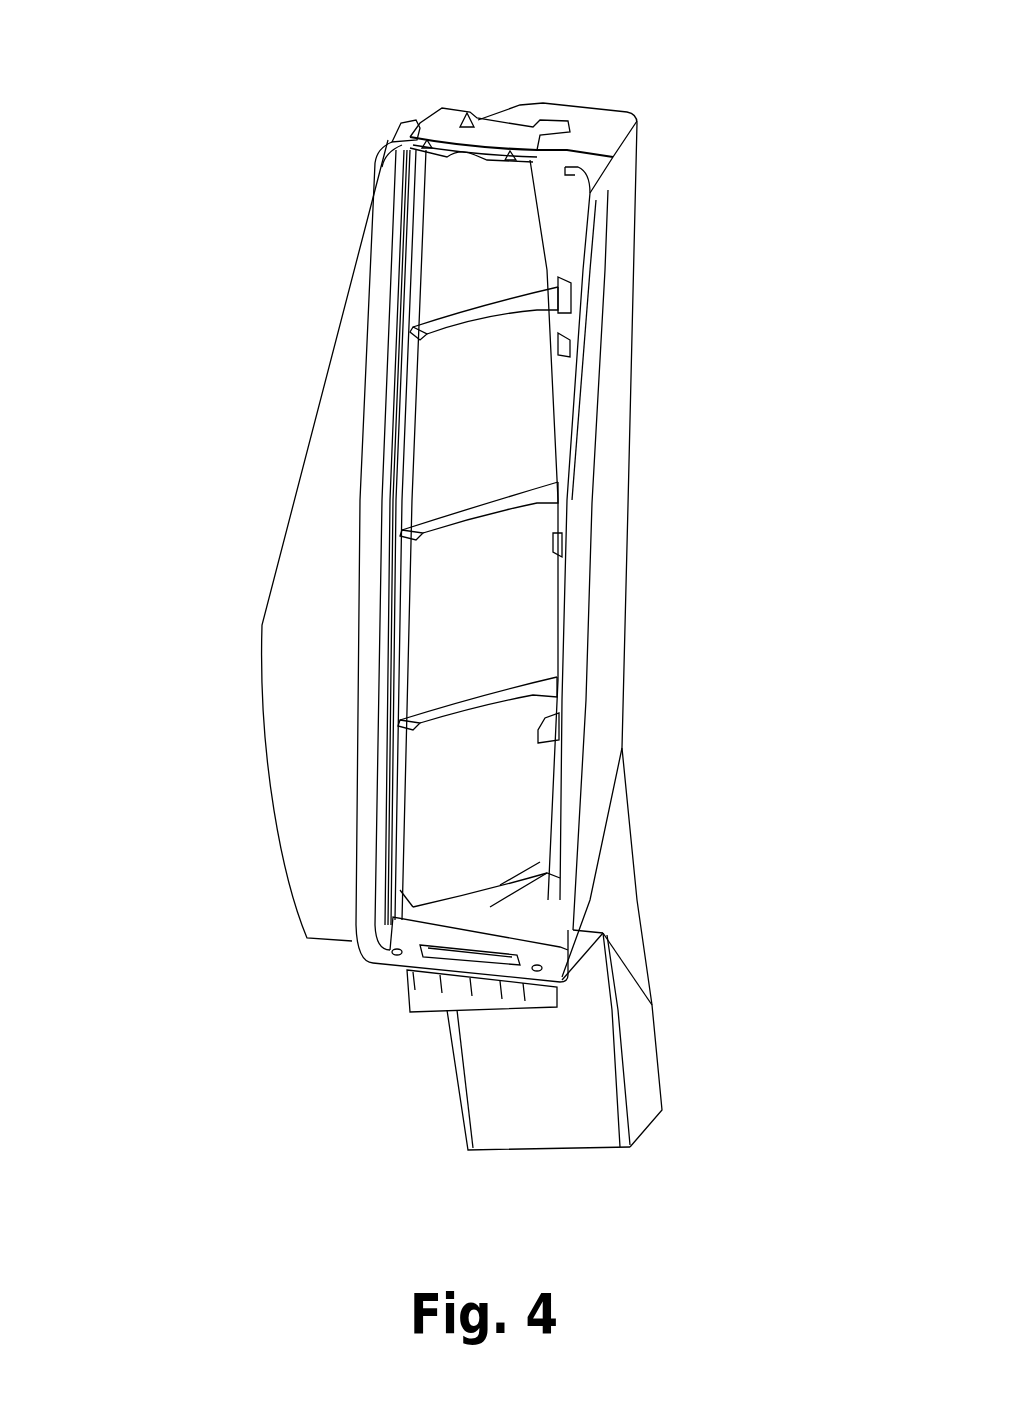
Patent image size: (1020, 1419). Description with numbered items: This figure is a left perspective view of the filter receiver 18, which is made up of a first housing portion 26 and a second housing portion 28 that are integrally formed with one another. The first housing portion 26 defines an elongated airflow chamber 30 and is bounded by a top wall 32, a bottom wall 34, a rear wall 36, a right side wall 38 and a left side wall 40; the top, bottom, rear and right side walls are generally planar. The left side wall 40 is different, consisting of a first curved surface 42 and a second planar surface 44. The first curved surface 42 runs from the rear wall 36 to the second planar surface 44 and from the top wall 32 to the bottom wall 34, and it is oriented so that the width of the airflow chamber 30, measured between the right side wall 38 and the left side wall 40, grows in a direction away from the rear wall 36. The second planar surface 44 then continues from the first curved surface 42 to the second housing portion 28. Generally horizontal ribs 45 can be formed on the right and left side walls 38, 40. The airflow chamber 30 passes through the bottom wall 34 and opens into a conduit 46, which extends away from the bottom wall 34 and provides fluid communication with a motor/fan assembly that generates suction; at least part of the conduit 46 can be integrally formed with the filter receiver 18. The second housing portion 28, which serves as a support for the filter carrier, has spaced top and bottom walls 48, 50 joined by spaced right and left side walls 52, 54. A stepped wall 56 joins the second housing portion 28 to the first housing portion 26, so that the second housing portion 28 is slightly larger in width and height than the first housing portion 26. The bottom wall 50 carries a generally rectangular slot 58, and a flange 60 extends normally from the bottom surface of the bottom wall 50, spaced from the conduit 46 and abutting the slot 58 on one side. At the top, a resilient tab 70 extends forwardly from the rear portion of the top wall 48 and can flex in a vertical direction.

The filter receiver 18 is at (157, 211).
The first housing portion 26 is at (634, 375).
The second housing portion 28 is at (606, 304).
The airflow chamber 30 is at (508, 426).
The top wall 32 is at (583, 115).
The bottom wall 34 is at (530, 905).
The rear wall 36 is at (561, 205).
The right side wall 38 is at (612, 483).
The left side wall 40 is at (163, 336).
The first curved surface 42 is at (438, 386).
The second planar surface 44 is at (415, 448).
The ribs 45 is at (412, 323).
The conduit 46 is at (643, 1050).
The top wall 48 is at (398, 125).
The bottom wall 50 is at (375, 950).
The right side wall 52 is at (578, 900).
The left side wall 54 is at (372, 893).
The stepped wall 56 is at (385, 822).
The slot 58 is at (456, 960).
The flange 60 is at (430, 1000).
The resilient tab 70 is at (438, 104).